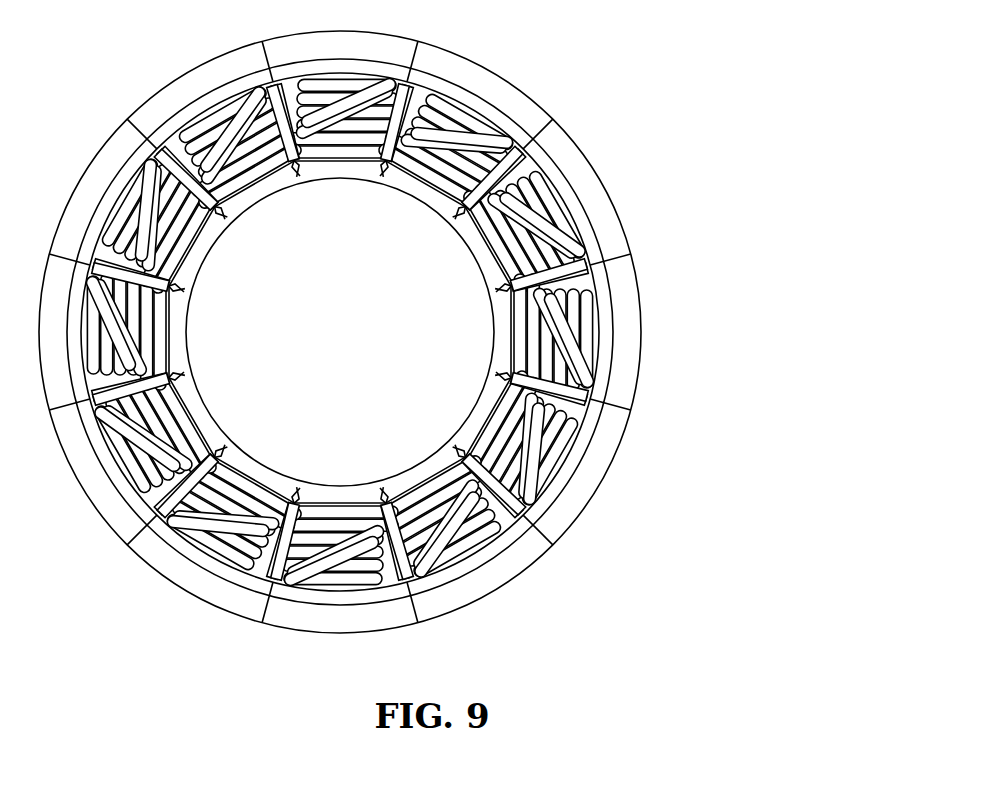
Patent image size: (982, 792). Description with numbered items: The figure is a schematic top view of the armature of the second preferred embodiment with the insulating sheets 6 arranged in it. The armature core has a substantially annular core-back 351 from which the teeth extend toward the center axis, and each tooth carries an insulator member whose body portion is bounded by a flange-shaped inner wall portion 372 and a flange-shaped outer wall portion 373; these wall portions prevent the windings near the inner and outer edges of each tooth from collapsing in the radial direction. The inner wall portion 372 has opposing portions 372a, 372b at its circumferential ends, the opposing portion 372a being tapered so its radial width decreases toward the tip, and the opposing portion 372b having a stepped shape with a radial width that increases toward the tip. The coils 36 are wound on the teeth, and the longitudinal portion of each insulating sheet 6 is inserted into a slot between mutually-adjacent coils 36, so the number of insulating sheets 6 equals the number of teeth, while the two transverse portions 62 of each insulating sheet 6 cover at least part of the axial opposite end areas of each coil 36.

The insulating sheet 6 is at (434, 332).
The transverse portion 62 is at (420, 332).
The core-back 351 is at (510, 80).
The outer wall portion 373 is at (500, 120).
The inner wall portion 372 is at (468, 232).
The opposing portion 372a is at (477, 208).
The opposing portion 372b is at (573, 283).
The coil 36 is at (570, 330).